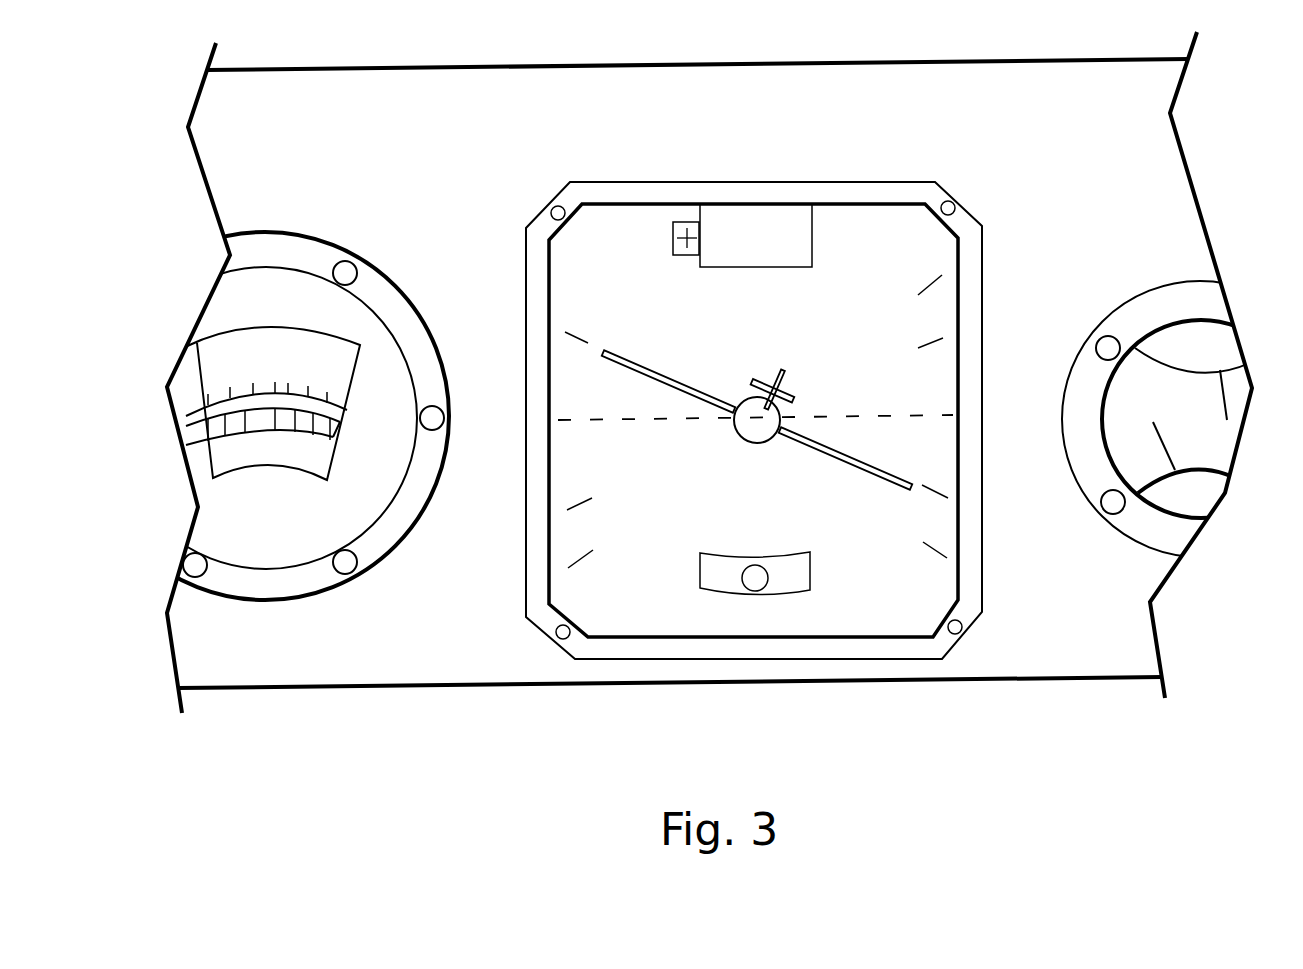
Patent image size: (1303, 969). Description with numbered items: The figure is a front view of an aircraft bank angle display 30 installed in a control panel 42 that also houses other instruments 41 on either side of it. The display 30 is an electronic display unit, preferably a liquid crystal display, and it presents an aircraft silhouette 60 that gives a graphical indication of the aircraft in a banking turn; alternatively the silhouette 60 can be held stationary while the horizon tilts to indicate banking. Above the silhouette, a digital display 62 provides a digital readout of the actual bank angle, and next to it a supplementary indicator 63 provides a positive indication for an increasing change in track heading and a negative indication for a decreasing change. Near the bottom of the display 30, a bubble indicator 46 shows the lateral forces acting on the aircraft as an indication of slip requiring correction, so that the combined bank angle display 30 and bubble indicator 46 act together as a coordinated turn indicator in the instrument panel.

The bank angle display 30 is at (925, 643).
The other instruments 41 is at (288, 257).
The control panel 42 is at (405, 637).
The bubble indicator 46 is at (797, 582).
The aircraft silhouette 60 is at (567, 275).
The digital display 62 is at (790, 215).
The supplementary indicator 63 is at (682, 220).